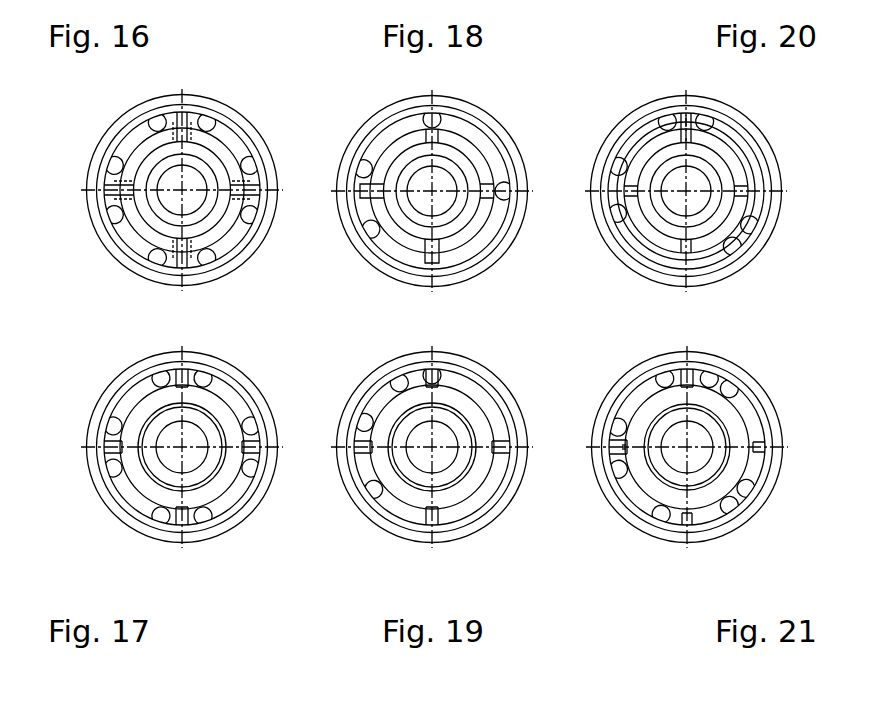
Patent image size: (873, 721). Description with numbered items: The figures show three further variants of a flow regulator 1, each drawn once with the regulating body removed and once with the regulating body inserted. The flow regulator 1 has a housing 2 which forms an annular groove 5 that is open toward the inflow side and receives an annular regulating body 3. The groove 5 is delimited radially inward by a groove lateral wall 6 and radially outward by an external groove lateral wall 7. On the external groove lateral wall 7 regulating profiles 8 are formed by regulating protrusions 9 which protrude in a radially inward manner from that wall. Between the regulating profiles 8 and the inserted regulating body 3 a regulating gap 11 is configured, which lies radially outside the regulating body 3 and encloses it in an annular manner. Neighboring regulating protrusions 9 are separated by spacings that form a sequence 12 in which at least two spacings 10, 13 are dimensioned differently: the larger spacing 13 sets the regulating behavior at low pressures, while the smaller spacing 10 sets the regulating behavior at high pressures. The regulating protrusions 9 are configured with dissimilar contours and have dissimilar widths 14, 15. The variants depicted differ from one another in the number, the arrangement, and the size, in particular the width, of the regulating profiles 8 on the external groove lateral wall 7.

In FIG. 16, the flow regulator 1 is at (103, 348).
In FIG. 18, the flow regulator 1 is at (383, 348).
In FIG. 16, the housing 2 is at (117, 124).
In FIG. 18, the housing 2 is at (365, 128).
In FIG. 20, the housing 2 is at (620, 127).
In FIG. 17, the housing 2 is at (112, 502).
In FIG. 19, the housing 2 is at (362, 502).
In FIG. 21, the housing 2 is at (613, 393).
In FIG. 17, the regulating body 3 is at (133, 465).
In FIG. 19, the regulating body 3 is at (383, 465).
In FIG. 21, the regulating body 3 is at (632, 455).
In FIG. 16, the annular groove 5 is at (219, 143).
In FIG. 18, the annular groove 5 is at (459, 149).
In FIG. 20, the annular groove 5 is at (734, 152).
In FIG. 16, the groove lateral wall 6 is at (158, 163).
In FIG. 18, the groove lateral wall 6 is at (410, 160).
In FIG. 20, the groove lateral wall 6 is at (680, 157).
In FIG. 16, the external groove lateral wall 7 is at (121, 243).
In FIG. 18, the external groove lateral wall 7 is at (375, 243).
In FIG. 20, the external groove lateral wall 7 is at (630, 238).
In FIG. 16, the regulating profile 8 is at (203, 237).
In FIG. 18, the regulating profile 8 is at (371, 178).
In FIG. 20, the regulating profile 8 is at (697, 142).
In FIG. 16, the regulating protrusion 9 is at (161, 123).
In FIG. 18, the regulating protrusion 9 is at (400, 124).
In FIG. 20, the regulating protrusion 9 is at (683, 132).
In FIG. 16, the spacing 10 is at (168, 112).
In FIG. 18, the spacing 10 is at (412, 122).
In FIG. 17, the regulating gap 11 is at (233, 405).
In FIG. 19, the regulating gap 11 is at (466, 391).
In FIG. 21, the regulating gap 11 is at (728, 398).
In FIG. 17, the sequence of spacings 12 is at (222, 515).
In FIG. 19, the sequence of spacings 12 is at (368, 405).
In FIG. 21, the sequence of spacings 12 is at (716, 375).
In FIG. 16, the spacing 13 is at (234, 146).
In FIG. 18, the spacing 13 is at (494, 148).
In FIG. 20, the spacing 13 is at (607, 192).
In FIG. 21, the width 14 is at (756, 525).
In FIG. 21, the width 15 is at (725, 542).